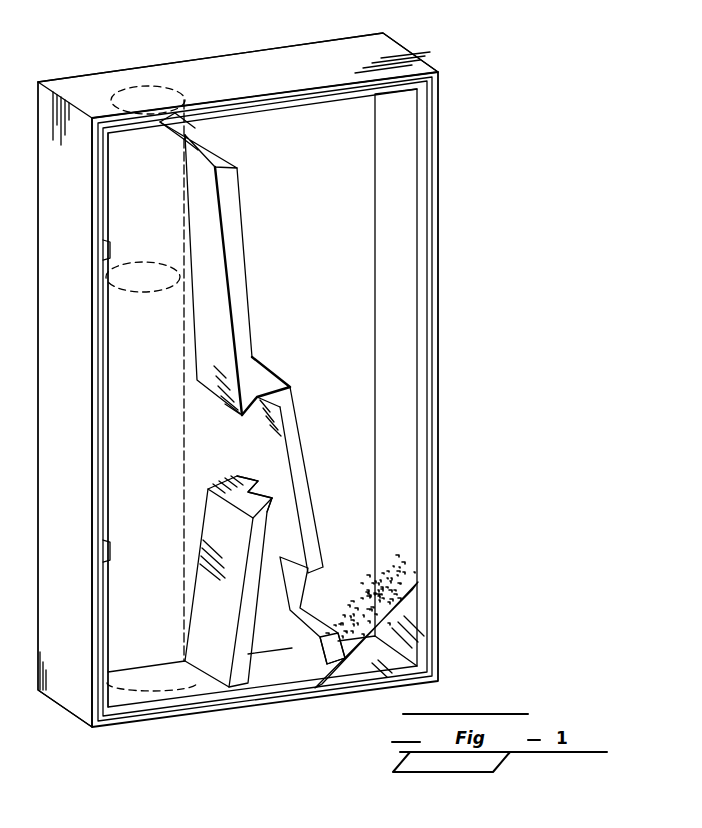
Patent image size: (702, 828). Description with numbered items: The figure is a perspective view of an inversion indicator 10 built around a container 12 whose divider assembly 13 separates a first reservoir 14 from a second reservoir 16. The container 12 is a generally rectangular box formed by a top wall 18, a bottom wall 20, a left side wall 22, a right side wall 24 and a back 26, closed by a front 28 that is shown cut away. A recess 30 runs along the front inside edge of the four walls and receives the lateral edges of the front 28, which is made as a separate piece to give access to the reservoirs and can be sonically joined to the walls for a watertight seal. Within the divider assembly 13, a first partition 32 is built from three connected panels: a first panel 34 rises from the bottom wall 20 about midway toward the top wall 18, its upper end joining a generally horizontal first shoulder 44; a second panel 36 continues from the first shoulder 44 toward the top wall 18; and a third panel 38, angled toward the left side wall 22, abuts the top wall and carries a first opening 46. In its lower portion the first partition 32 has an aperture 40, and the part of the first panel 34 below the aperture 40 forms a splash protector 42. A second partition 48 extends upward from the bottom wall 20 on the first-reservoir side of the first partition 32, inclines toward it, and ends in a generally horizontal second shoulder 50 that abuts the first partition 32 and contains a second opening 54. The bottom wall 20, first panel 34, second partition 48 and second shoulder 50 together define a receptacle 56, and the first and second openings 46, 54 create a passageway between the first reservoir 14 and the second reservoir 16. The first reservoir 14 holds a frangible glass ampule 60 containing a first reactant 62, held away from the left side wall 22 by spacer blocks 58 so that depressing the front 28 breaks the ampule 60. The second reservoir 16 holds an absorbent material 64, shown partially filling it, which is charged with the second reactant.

The inversion indicator 10 is at (180, 52).
The container 12 is at (95, 72).
The divider assembly 13 is at (267, 311).
The first reservoir 14 is at (133, 163).
The second reservoir 16 is at (355, 140).
The top wall 18 is at (282, 68).
The bottom wall 20 is at (193, 683).
The left side wall 22 is at (65, 688).
The right side wall 24 is at (410, 500).
The back 26 is at (312, 216).
The front 28 is at (418, 628).
The recess 30 is at (423, 400).
The first partition 32 is at (315, 482).
The first panel 34 is at (313, 535).
The second panel 36 is at (247, 340).
The third panel 38 is at (237, 152).
The aperture 40 is at (320, 597).
The splash protector 42 is at (320, 653).
The first shoulder 44 is at (268, 383).
The first opening 46 is at (205, 127).
The second partition 48 is at (197, 585).
The second shoulder 50 is at (250, 473).
The second opening 54 is at (273, 506).
The receptacle 56 is at (263, 633).
The spacer blocks 58 is at (115, 548).
The glass ampule 60 is at (132, 390).
The first reactant 62 is at (141, 268).
The absorbent material 64 is at (395, 570).